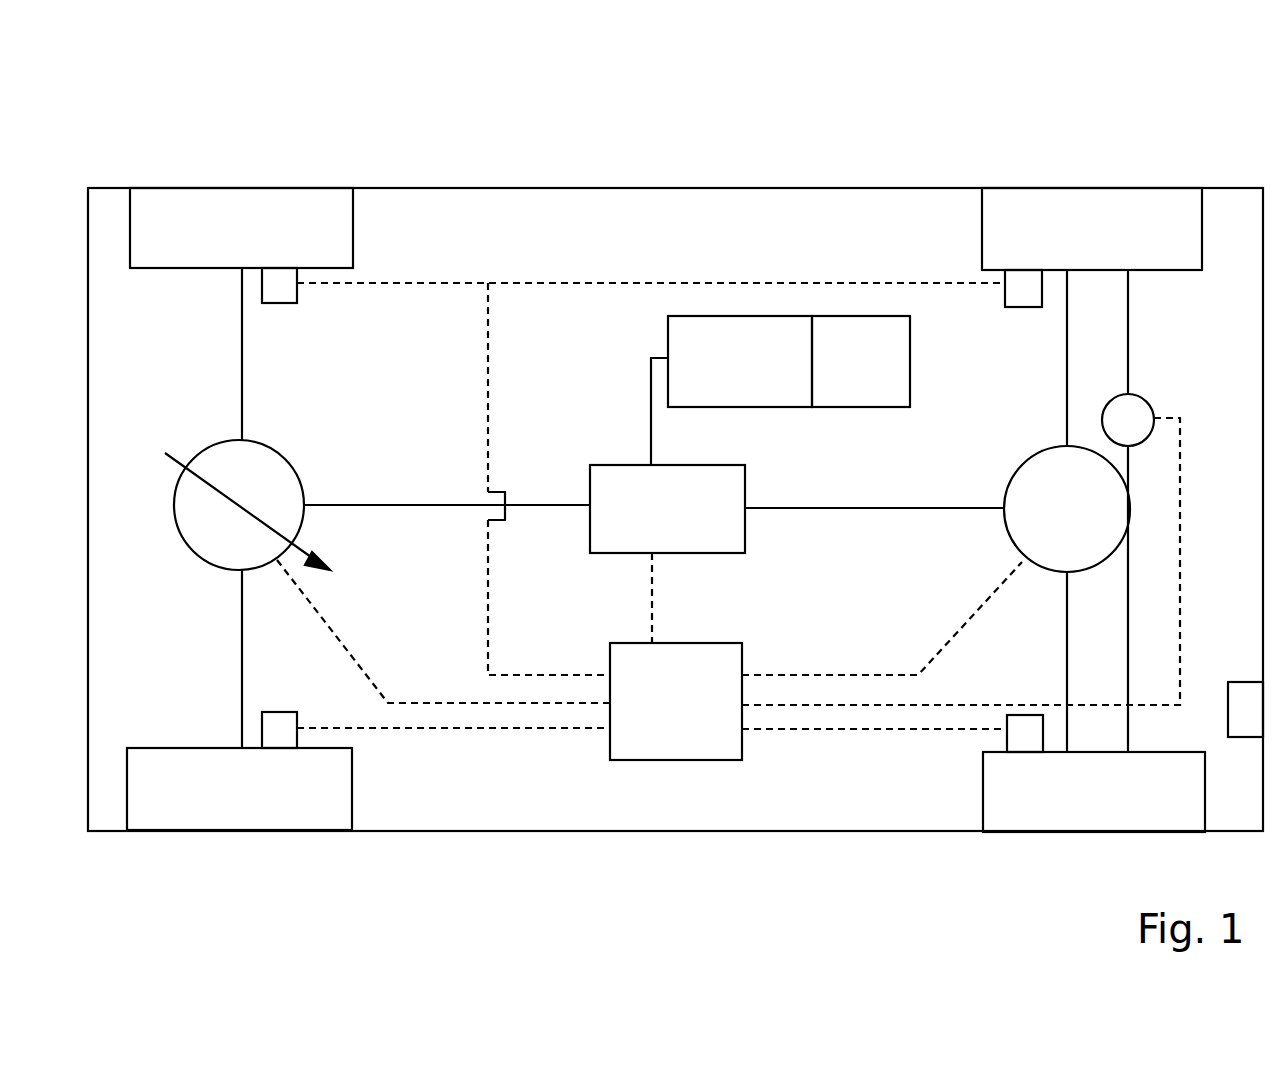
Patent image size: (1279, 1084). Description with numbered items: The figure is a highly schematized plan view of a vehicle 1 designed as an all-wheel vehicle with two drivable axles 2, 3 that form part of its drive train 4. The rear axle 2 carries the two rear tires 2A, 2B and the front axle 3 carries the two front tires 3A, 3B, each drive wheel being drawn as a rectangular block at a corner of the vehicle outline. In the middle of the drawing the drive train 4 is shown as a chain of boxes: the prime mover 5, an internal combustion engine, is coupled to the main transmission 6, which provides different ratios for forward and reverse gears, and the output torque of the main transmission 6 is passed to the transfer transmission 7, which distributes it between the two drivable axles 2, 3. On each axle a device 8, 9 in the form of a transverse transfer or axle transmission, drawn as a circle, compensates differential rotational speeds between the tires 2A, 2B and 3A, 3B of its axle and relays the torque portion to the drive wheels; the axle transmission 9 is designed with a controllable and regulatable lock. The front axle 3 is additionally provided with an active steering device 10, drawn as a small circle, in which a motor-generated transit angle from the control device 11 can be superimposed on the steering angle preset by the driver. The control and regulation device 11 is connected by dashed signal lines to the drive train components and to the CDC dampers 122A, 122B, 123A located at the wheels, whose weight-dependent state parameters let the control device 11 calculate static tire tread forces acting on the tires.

The vehicle 1 is at (155, 165).
The drivable axle 2 is at (219, 412).
The drive wheel 2A is at (274, 194).
The drive wheel 2B is at (305, 785).
The drivable axle 3 is at (1157, 366).
The drive wheel 3A is at (1081, 216).
The drive wheel 3B is at (1043, 807).
The drive train 4 is at (524, 252).
The prime mover 5 is at (828, 315).
The main transmission 6 is at (753, 313).
The transfer transmission 7 is at (612, 458).
The axle transmission 8 is at (320, 462).
The axle transmission 9 is at (1032, 442).
The active steering device 10 is at (1130, 430).
The control device 11 is at (650, 762).
The CDC damper 122A is at (287, 290).
The CDC damper 122B is at (280, 733).
The CDC damper 123A is at (1027, 283).